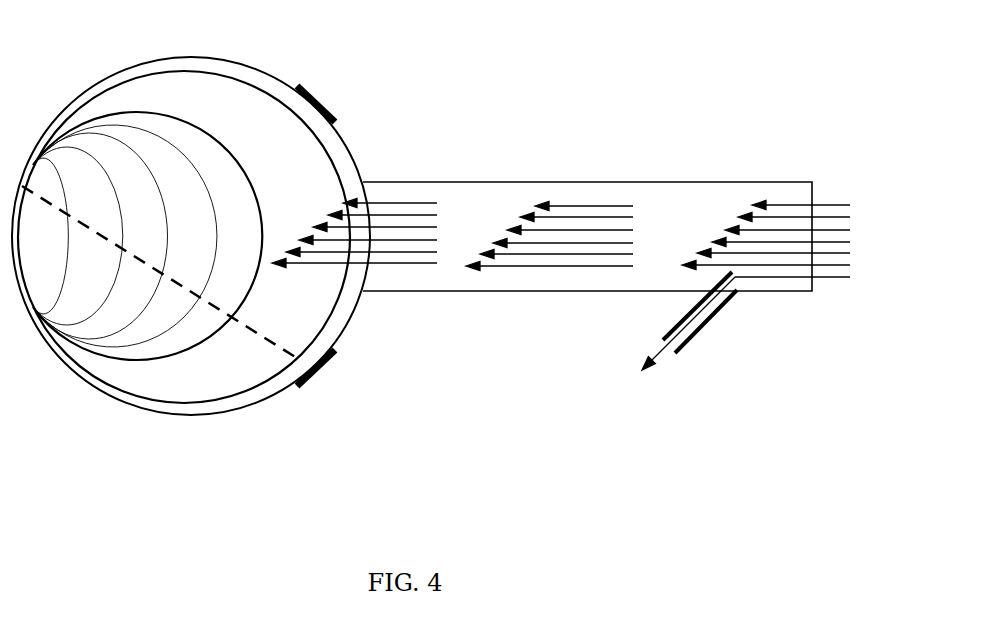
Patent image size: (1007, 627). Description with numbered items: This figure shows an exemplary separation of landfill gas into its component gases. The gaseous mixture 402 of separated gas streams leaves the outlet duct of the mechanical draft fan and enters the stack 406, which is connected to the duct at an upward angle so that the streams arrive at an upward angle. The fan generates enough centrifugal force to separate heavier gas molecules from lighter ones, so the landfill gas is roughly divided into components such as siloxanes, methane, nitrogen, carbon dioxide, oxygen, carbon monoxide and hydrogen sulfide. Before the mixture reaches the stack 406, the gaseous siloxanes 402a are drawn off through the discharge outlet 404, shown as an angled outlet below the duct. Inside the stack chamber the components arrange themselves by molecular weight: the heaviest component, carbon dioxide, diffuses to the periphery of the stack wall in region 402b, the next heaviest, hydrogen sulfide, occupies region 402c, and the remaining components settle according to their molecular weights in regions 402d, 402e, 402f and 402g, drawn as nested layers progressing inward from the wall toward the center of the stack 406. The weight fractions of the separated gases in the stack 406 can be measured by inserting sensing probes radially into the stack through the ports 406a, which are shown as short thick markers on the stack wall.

The gaseous mixture 402 is at (708, 180).
The gaseous siloxanes 402a is at (663, 350).
The region of the stack chamber 402b is at (500, 266).
The region of the stack chamber 402c is at (553, 254).
The region of the stack chamber 402d is at (595, 243).
The region of the stack chamber 402e is at (542, 205).
The region of the stack chamber 402f is at (578, 217).
The region of the stack chamber 402g is at (624, 206).
The discharge outlet 404 is at (720, 313).
The stack 406 is at (245, 62).
The ports 406a is at (313, 390).